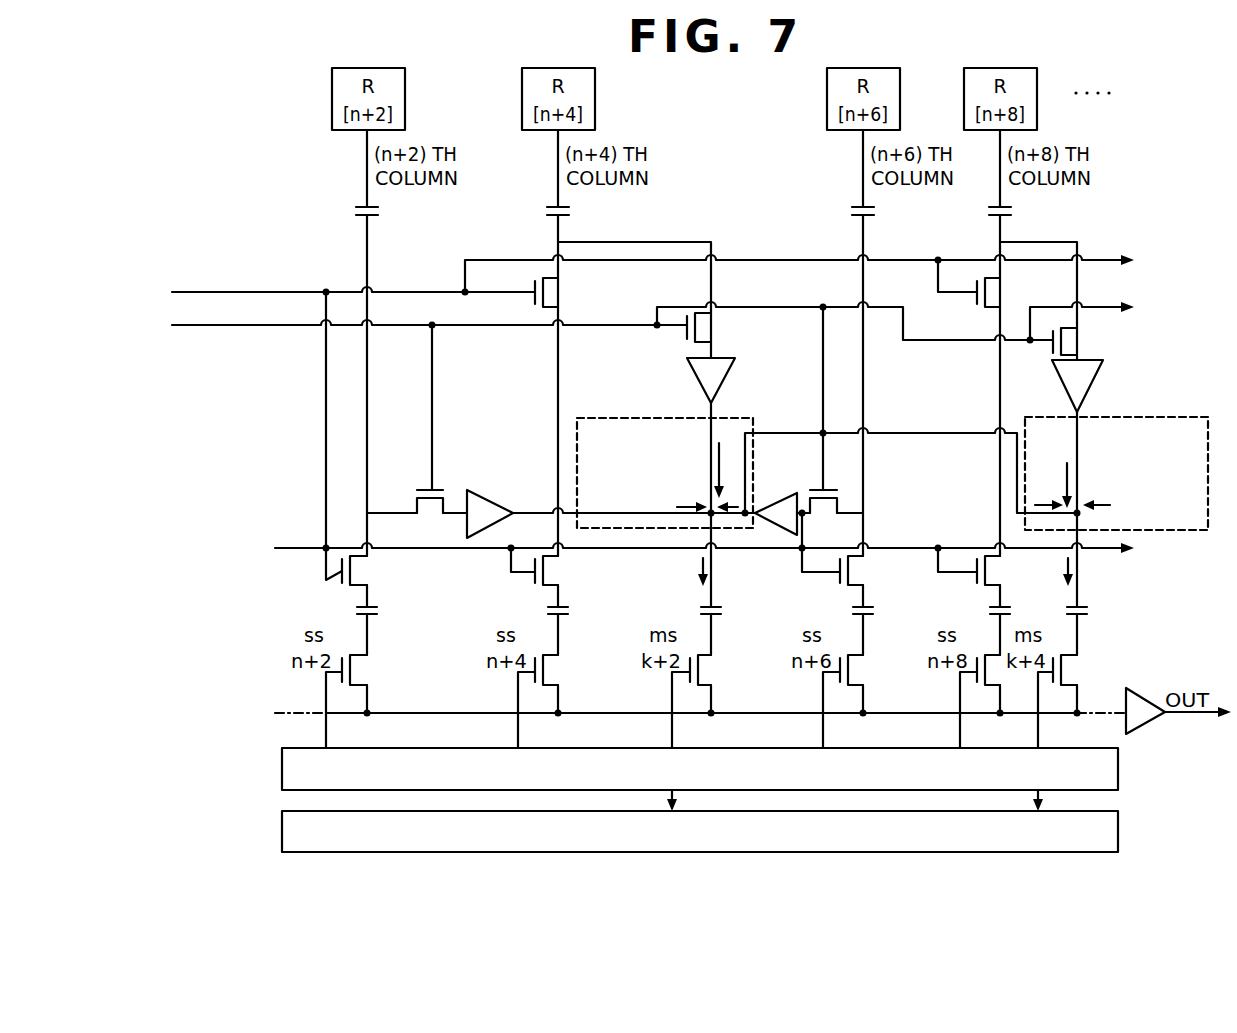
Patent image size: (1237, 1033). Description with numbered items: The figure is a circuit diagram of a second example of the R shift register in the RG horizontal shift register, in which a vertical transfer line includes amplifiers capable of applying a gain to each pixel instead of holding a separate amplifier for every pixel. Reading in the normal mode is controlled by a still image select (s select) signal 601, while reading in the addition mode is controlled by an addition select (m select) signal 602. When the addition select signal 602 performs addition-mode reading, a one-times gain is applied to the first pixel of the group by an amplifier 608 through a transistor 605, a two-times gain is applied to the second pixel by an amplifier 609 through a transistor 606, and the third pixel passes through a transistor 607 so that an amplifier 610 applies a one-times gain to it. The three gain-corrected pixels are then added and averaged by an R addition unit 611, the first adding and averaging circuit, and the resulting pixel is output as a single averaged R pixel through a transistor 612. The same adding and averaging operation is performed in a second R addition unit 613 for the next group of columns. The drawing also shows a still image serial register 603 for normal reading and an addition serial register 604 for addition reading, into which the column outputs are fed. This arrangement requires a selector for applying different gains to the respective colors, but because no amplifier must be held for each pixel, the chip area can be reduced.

The still image select (s select) signal 601 is at (228, 291).
The addition select (m select) signal 602 is at (228, 327).
The still image serial register 603 is at (282, 771).
The addition serial register 604 is at (282, 833).
The transistor 605 is at (459, 481).
The transistor 606 is at (716, 325).
The transistor 607 is at (824, 526).
The amplifier 608 is at (490, 497).
The amplifier 609 is at (722, 382).
The amplifier 610 is at (772, 500).
The R addition unit 611 is at (600, 418).
The transistor 612 is at (712, 667).
The R addition unit 613 is at (1167, 417).